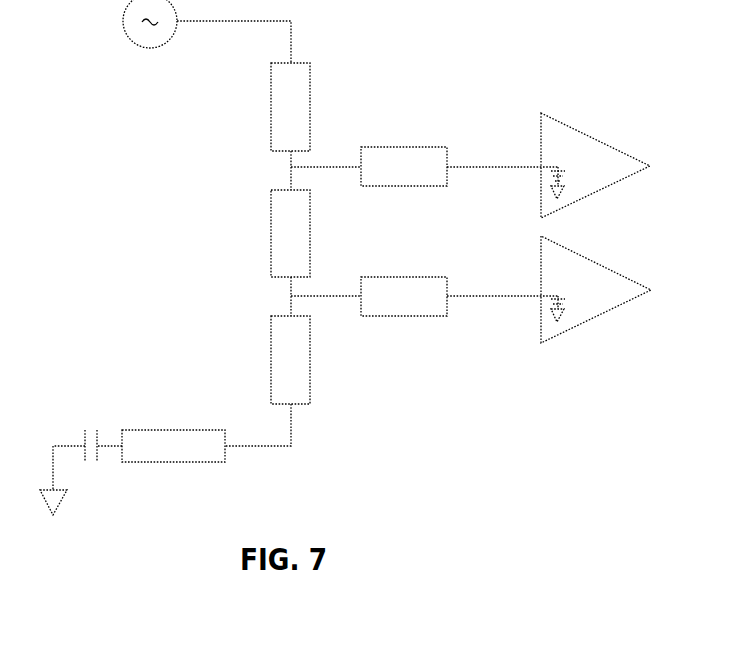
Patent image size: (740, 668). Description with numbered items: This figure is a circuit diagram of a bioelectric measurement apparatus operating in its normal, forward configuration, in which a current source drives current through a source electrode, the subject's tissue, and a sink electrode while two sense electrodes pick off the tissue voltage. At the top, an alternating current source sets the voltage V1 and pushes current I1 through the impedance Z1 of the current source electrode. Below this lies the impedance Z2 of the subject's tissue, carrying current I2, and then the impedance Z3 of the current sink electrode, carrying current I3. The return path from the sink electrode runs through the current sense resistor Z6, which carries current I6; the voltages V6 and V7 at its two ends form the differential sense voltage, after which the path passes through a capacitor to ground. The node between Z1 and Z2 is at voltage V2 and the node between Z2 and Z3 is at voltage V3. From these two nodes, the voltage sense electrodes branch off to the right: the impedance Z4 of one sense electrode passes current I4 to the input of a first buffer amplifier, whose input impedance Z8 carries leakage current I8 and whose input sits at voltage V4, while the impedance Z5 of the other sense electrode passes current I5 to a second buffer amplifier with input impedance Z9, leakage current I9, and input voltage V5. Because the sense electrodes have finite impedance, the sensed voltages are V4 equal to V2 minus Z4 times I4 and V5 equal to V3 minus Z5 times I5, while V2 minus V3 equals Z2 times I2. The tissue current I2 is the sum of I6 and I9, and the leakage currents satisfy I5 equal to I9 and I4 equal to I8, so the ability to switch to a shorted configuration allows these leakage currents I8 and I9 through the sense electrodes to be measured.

The impedance of current source electrode Z1 is at (290, 107).
The impedance of subject's tissue Z2 is at (290, 233).
The impedance of current sink electrode Z3 is at (290, 360).
The impedance of first voltage sense electrode Z4 is at (404, 166).
The impedance of second voltage sense electrode Z5 is at (404, 296).
The current sense resistor Z6 is at (173, 446).
The input impedance of first buffer amplifier Z8 is at (595, 165).
The input impedance of second buffer amplifier Z9 is at (596, 289).
The voltage at current source node V1 is at (312, 42).
The voltage at first tissue node V2 is at (332, 158).
The voltage at second tissue node V3 is at (332, 288).
The voltage at first buffer amplifier input V4 is at (490, 158).
The voltage at second buffer amplifier input V5 is at (490, 282).
The voltage at first end of current sense resistor V6 is at (228, 417).
The voltage at second end of current sense resistor V7 is at (108, 417).
The current through source electrode impedance I1 is at (252, 88).
The current through tissue impedance I2 is at (252, 213).
The current through sink electrode impedance I3 is at (252, 343).
The current through first sense electrode impedance I4 is at (417, 139).
The current through second sense electrode impedance I5 is at (417, 270).
The current through current sense resistor I6 is at (205, 415).
The leakage current into first buffer amplifier I8 is at (533, 172).
The leakage current into second buffer amplifier I9 is at (533, 297).